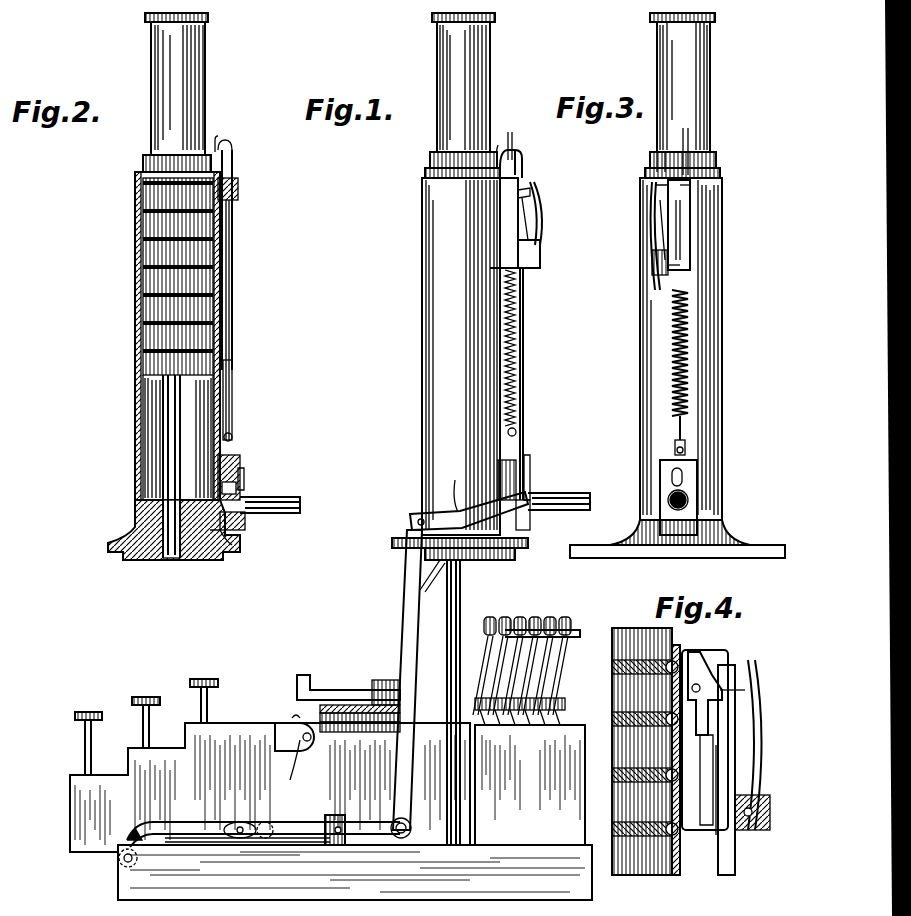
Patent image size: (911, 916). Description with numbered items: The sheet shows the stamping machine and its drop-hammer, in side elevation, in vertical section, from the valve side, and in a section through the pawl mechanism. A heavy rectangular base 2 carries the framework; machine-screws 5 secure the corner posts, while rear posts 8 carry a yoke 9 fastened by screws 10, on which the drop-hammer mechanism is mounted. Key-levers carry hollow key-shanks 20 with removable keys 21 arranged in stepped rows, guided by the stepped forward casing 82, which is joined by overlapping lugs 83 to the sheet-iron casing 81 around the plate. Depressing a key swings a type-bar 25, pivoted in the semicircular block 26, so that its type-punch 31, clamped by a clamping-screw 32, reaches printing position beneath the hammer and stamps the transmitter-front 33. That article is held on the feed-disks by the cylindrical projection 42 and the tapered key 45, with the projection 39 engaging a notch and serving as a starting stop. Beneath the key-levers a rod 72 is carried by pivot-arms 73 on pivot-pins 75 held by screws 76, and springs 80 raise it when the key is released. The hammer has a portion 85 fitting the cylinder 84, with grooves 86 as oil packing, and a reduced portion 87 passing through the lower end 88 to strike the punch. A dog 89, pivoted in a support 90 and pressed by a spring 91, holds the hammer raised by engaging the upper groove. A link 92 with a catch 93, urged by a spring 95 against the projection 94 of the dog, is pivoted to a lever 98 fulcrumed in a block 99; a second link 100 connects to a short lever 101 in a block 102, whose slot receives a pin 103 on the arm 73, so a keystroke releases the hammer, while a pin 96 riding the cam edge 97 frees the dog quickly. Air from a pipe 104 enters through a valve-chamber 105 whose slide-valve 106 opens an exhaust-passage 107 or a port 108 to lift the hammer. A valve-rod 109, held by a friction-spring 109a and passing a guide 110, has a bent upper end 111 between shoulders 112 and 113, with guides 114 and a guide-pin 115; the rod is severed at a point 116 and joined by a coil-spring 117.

In FIG. 1, the base 2 is at (355, 872).
In FIG. 1, the machine-screws 5 is at (292, 720).
In FIG. 1, the posts 8 is at (462, 590).
In FIG. 1, the yoke 9 is at (510, 560).
In FIG. 3, the yoke 9 is at (598, 558).
In FIG. 1, the screws 10 is at (422, 578).
In FIG. 1, the hollow key-shanks 20 is at (91, 750).
In FIG. 1, the keys 21 is at (95, 714).
In FIG. 1, the type-bars 25 is at (515, 675).
In FIG. 1, the semicircular block 26 is at (552, 698).
In FIG. 1, the type-punch 31 is at (572, 628).
In FIG. 1, the clamping-screw 32 is at (506, 620).
In FIG. 1, the transmitter-front 33 is at (322, 712).
In FIG. 1, the projection 39 is at (372, 728).
In FIG. 1, the cylindrical projection 42 is at (385, 682).
In FIG. 3, the cylindrical projection 42 is at (660, 288).
In FIG. 1, the tapered key 45 is at (328, 692).
In FIG. 1, the rod 72 is at (270, 826).
In FIG. 1, the pivot-arms 73 is at (190, 822).
In FIG. 1, the pivot-pins 75 is at (137, 860).
In FIG. 1, the screws 76 is at (132, 835).
In FIG. 1, the springs 80 is at (195, 845).
In FIG. 1, the sheet-iron casing 81 is at (530, 785).
In FIG. 1, the forward casing 82 is at (270, 787).
In FIG. 1, the overlapping lugs 83 is at (304, 760).
In FIG. 2, the cylinder 84 is at (138, 410).
In FIG. 1, the cylinder 84 is at (436, 308).
In FIG. 2, the hammer portion 85 is at (165, 283).
In FIG. 1, the hammer portion 85 is at (452, 133).
In FIG. 3, the hammer portion 85 is at (708, 92).
In FIG. 4, the hammer portion 85 is at (640, 870).
In FIG. 2, the grooves 86 is at (143, 320).
In FIG. 1, the grooves 86 is at (592, 728).
In FIG. 4, the grooves 86 is at (620, 660).
In FIG. 2, the reduced portion 87 is at (165, 555).
In FIG. 2, the lower end of cylinder 88 is at (108, 545).
In FIG. 1, the lower end of cylinder 88 is at (392, 542).
In FIG. 3, the lower end of cylinder 88 is at (748, 540).
In FIG. 4, the dog 89 is at (696, 658).
In FIG. 1, the support 90 is at (505, 216).
In FIG. 3, the support 90 is at (668, 222).
In FIG. 4, the support 90 is at (716, 658).
In FIG. 4, the spring 91 is at (714, 740).
In FIG. 1, the link 92 is at (520, 328).
In FIG. 4, the link 92 is at (736, 778).
In FIG. 1, the catch 93 is at (530, 191).
In FIG. 3, the catch 93 is at (655, 190).
In FIG. 4, the catch 93 is at (706, 675).
In FIG. 1, the projection 94 is at (530, 207).
In FIG. 3, the projection 94 is at (662, 210).
In FIG. 4, the projection 94 is at (730, 692).
In FIG. 1, the spring 95 is at (538, 232).
In FIG. 3, the spring 95 is at (652, 236).
In FIG. 4, the spring 95 is at (756, 700).
In FIG. 4, the pin 96 is at (735, 808).
In FIG. 4, the cam edge 97 is at (717, 775).
In FIG. 1, the lever 98 is at (525, 500).
In FIG. 1, the block 99 is at (447, 491).
In FIG. 1, the second link 100 is at (408, 618).
In FIG. 1, the short lever 101 is at (358, 830).
In FIG. 1, the block 102 is at (334, 815).
In FIG. 1, the pin 103 is at (238, 825).
In FIG. 2, the pipe 104 is at (292, 497).
In FIG. 1, the pipe 104 is at (530, 510).
In FIG. 3, the pipe 104 is at (668, 500).
In FIG. 2, the valve-chamber 105 is at (245, 520).
In FIG. 1, the valve-chamber 105 is at (530, 520).
In FIG. 3, the valve-chamber 105 is at (660, 515).
In FIG. 2, the slide-valve 106 is at (238, 462).
In FIG. 1, the slide-valve 106 is at (516, 448).
In FIG. 3, the slide-valve 106 is at (675, 458).
In FIG. 2, the exhaust-passage 107 is at (238, 540).
In FIG. 2, the port 108 is at (238, 490).
In FIG. 2, the valve-rod 109 is at (234, 250).
In FIG. 1, the valve-rod 109 is at (522, 165).
In FIG. 3, the valve-rod 109 is at (657, 162).
In FIG. 3, the friction-spring 109a is at (678, 228).
In FIG. 2, the guide 110 is at (238, 188).
In FIG. 3, the guide 110 is at (690, 188).
In FIG. 2, the upper end of valve-rod 111 is at (216, 140).
In FIG. 1, the upper end of valve-rod 111 is at (497, 145).
In FIG. 2, the shoulder 112 is at (210, 18).
In FIG. 1, the shoulder 112 is at (436, 22).
In FIG. 3, the shoulder 112 is at (655, 22).
In FIG. 2, the shoulder 113 is at (152, 160).
In FIG. 2, the guides 114 is at (230, 142).
In FIG. 1, the guides 114 is at (512, 138).
In FIG. 3, the guides 114 is at (690, 118).
In FIG. 2, the guide-pin 115 is at (244, 472).
In FIG. 1, the guide-pin 115 is at (530, 470).
In FIG. 3, the guide-pin 115 is at (672, 477).
In FIG. 2, the severance point 116 is at (232, 365).
In FIG. 2, the coil-spring 117 is at (232, 325).
In FIG. 1, the coil-spring 117 is at (524, 348).
In FIG. 3, the coil-spring 117 is at (672, 345).